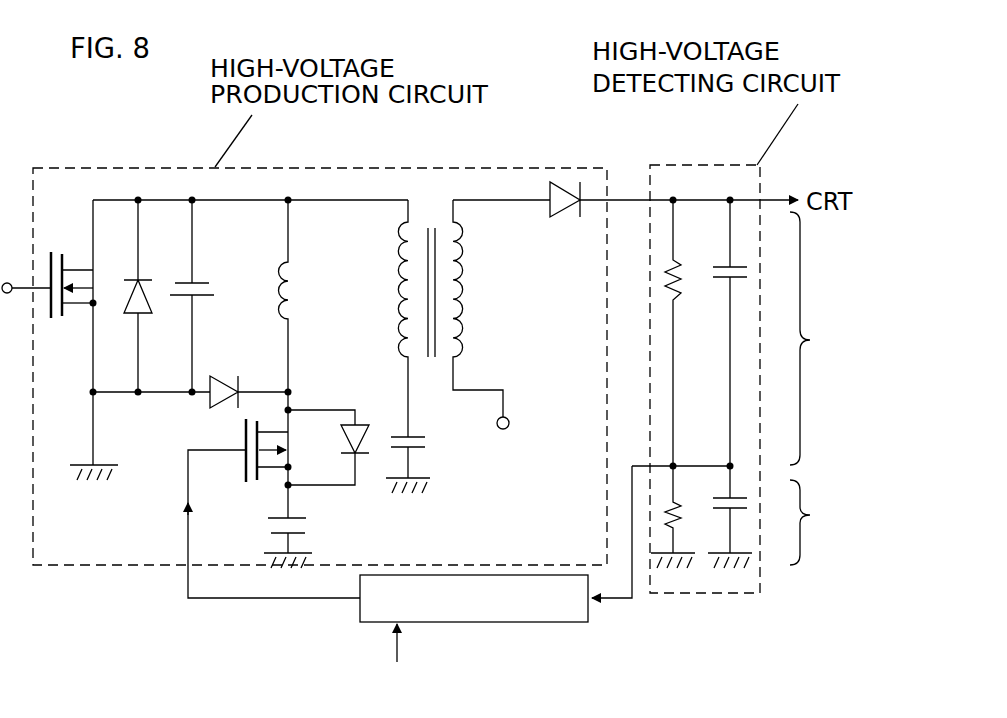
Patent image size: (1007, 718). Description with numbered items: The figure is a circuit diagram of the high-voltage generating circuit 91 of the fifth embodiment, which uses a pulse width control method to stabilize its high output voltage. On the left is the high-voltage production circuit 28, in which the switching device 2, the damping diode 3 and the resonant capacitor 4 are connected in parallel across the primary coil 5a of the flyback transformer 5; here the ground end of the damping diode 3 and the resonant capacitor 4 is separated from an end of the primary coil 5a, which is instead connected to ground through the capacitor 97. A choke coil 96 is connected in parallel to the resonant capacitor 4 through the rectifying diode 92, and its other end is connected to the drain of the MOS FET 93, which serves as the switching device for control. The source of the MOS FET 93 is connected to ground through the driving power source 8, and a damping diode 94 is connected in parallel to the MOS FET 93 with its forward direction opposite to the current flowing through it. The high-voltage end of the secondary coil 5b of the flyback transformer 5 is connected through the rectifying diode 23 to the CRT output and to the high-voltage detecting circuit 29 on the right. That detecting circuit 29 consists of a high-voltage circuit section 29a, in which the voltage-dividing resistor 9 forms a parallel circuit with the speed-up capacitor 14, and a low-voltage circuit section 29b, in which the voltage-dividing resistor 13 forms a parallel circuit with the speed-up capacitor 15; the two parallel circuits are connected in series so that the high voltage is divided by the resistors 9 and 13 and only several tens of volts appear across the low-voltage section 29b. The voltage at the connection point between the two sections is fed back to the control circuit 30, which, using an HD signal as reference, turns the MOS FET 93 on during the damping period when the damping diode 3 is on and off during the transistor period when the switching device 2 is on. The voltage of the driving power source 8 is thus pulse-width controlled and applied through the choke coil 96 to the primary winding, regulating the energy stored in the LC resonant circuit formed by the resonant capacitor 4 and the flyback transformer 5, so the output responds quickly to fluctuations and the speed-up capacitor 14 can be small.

The switching device 2 is at (78, 318).
The damping diode 3 is at (136, 314).
The resonant capacitor 4 is at (200, 282).
The flyback transformer 5 is at (435, 273).
The primary coil 5a is at (392, 296).
The secondary coil 5b is at (470, 312).
The driving power source 8 is at (305, 518).
The voltage-dividing resistor 9 is at (667, 283).
The voltage-dividing resistor 13 is at (683, 506).
The speed-up capacitor 14 is at (735, 280).
The speed-up capacitor 15 is at (735, 512).
The rectifying diode 23 is at (565, 184).
The high-voltage production circuit 28 is at (265, 167).
The high-voltage detecting circuit 29 is at (683, 165).
The high-voltage circuit section 29a is at (833, 338).
The low-voltage circuit section 29b is at (828, 522).
The control circuit 30 is at (455, 622).
The high-voltage generating circuit 91 is at (52, 128).
The rectifying diode 92 is at (213, 372).
The MOS FET 93 is at (268, 470).
The damping diode 94 is at (350, 420).
The choke coil 96 is at (302, 262).
The capacitor 97 is at (415, 450).